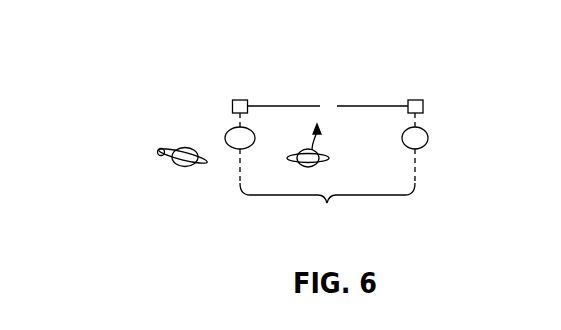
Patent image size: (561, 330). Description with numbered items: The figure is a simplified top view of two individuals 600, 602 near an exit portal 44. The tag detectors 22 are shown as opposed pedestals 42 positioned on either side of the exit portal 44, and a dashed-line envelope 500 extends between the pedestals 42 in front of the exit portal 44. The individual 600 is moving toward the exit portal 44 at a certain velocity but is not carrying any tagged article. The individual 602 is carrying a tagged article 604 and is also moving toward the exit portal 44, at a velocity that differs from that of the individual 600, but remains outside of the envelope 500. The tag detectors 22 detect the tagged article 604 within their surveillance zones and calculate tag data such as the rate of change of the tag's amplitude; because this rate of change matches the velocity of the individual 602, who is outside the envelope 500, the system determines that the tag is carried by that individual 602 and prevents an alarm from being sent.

The tag detector 22 is at (227, 133).
The pedestal 42 is at (235, 150).
The exit portal 44 is at (345, 106).
The envelope 500 is at (327, 211).
The individual 600 is at (307, 168).
The individual 602 is at (178, 167).
The tagged article 604 is at (157, 153).